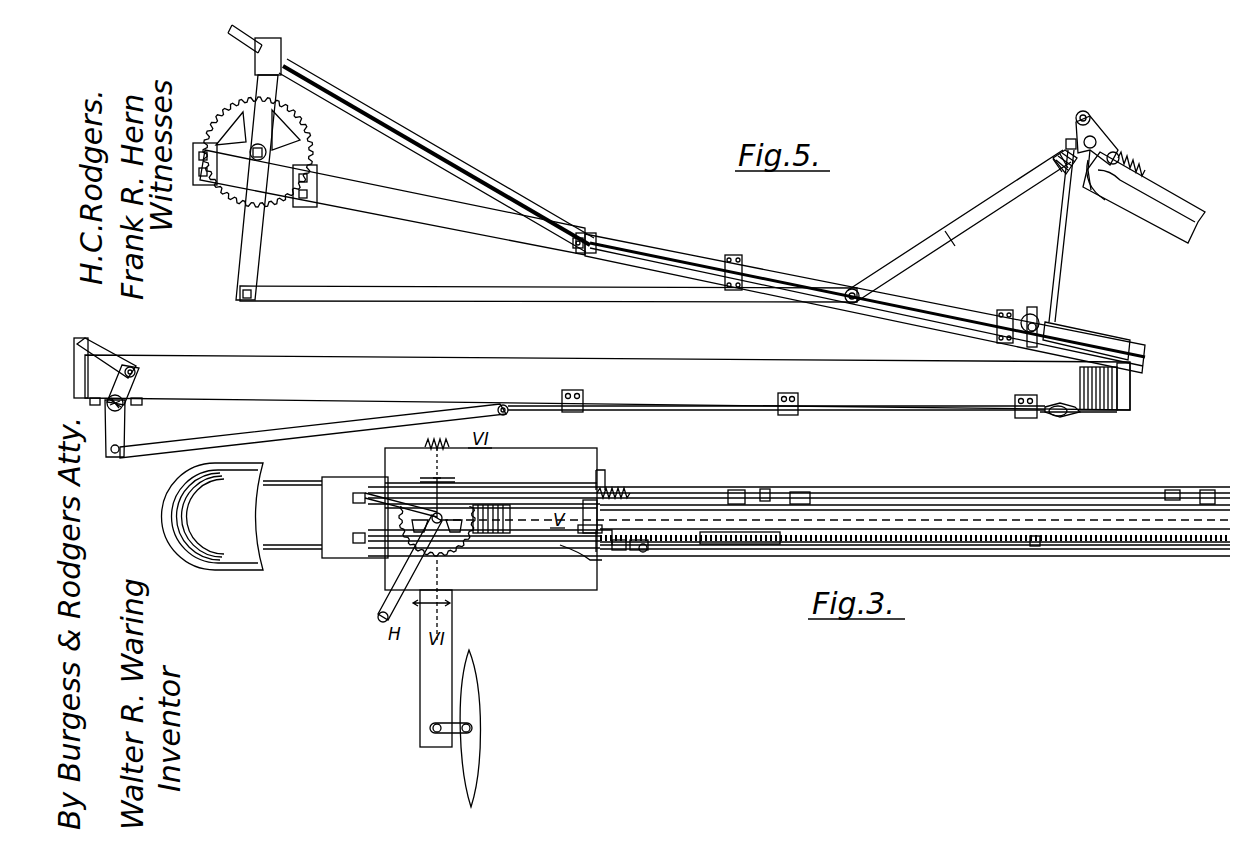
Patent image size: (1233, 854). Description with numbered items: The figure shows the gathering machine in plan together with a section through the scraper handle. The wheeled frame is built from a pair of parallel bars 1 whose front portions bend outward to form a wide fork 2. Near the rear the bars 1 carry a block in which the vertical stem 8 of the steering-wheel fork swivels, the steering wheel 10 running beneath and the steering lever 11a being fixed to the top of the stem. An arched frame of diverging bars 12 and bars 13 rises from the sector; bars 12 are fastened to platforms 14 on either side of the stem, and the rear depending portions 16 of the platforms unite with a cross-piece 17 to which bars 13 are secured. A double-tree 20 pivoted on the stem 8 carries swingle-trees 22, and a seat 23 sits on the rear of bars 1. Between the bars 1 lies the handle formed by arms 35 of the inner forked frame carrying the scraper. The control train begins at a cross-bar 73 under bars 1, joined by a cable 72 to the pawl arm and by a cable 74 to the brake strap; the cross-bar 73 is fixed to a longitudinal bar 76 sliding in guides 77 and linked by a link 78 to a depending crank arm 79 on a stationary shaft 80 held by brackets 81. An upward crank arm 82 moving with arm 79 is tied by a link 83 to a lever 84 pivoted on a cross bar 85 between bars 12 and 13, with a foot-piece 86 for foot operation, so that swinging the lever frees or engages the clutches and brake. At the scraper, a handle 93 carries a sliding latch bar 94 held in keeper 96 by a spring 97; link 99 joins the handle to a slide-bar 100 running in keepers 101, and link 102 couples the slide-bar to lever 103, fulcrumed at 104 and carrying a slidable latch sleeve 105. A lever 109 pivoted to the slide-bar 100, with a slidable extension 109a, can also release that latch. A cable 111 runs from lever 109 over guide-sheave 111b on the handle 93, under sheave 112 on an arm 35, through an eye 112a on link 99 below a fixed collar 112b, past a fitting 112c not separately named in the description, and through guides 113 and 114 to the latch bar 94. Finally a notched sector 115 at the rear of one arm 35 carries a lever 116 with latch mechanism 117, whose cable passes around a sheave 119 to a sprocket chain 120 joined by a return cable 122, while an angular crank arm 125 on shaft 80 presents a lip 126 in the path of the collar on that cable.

In FIG. 5, the parallel bars 1 is at (712, 340).
In FIG. 3, the parallel bars 1 is at (985, 492).
In FIG. 5, the fork 2 is at (1130, 376).
In FIG. 3, the vertical stem 8 is at (470, 472).
In FIG. 3, the steering wheel 10 is at (510, 518).
In FIG. 3, the steering lever 11a is at (380, 618).
In FIG. 3, the bars 12 is at (590, 500).
In FIG. 3, the bars 13 is at (355, 492).
In FIG. 3, the platforms 14 is at (520, 458).
In FIG. 3, the depending portions 16 is at (370, 490).
In FIG. 3, the cross-piece 17 is at (330, 516).
In FIG. 3, the double-tree 20 is at (430, 689).
In FIG. 3, the swingle-trees 22 is at (472, 705).
In FIG. 3, the seat 23 is at (213, 516).
In FIG. 5, the arms 35 is at (675, 245).
In FIG. 3, the arms 35 is at (1110, 500).
In FIG. 5, the cable 72 is at (1117, 397).
In FIG. 5, the cross-bar 73 is at (1058, 418).
In FIG. 5, the cable 74 is at (1100, 413).
In FIG. 5, the longitudinal bar 76 is at (750, 413).
In FIG. 5, the guides 77 is at (800, 414).
In FIG. 5, the link 78 is at (260, 433).
In FIG. 3, the link 78 is at (628, 497).
In FIG. 5, the crank arm 79 is at (108, 436).
In FIG. 5, the stationary shaft 80 is at (108, 406).
In FIG. 5, the brackets 81 is at (142, 402).
In FIG. 5, the crank arm 82 is at (138, 385).
In FIG. 3, the crank arm 82 is at (600, 520).
In FIG. 5, the link 83 is at (100, 358).
In FIG. 3, the link 83 is at (600, 478).
In FIG. 3, the lever 84 is at (430, 480).
In FIG. 3, the cross bar 85 is at (390, 495).
In FIG. 3, the foot-piece 86 is at (435, 468).
In FIG. 5, the handle 93 is at (1168, 215).
In FIG. 5, the latch bar 94 is at (1168, 188).
In FIG. 5, the keeper 96 is at (1145, 172).
In FIG. 5, the spring 97 is at (1122, 158).
In FIG. 5, the link 99 is at (978, 207).
In FIG. 5, the slide-bar 100 is at (810, 283).
In FIG. 3, the slide-bar 100 is at (1170, 490).
In FIG. 5, the keepers 101 is at (735, 258).
In FIG. 3, the keepers 101 is at (1208, 490).
In FIG. 5, the link 102 is at (445, 292).
In FIG. 3, the link 102 is at (1148, 542).
In FIG. 5, the lever 103 is at (245, 266).
In FIG. 3, the lever 103 is at (805, 492).
In FIG. 5, the fulcrum 104 is at (255, 158).
In FIG. 5, the slidable sleeve 105 is at (283, 52).
In FIG. 3, the slidable sleeve 105 is at (768, 490).
In FIG. 5, the lever 109 is at (425, 140).
In FIG. 3, the lever 109 is at (660, 512).
In FIG. 3, the slidable extension 109a is at (600, 470).
In FIG. 5, the cable 111 is at (485, 178).
In FIG. 5, the guide-sheave 111b is at (1078, 113).
In FIG. 5, the guide sheave 112 is at (1045, 320).
In FIG. 5, the eye 112a is at (1089, 175).
In FIG. 5, the fixed collar 112b is at (1065, 143).
In FIG. 5, the joint 112c is at (1058, 157).
In FIG. 5, the guide 113 is at (600, 248).
In FIG. 5, the guide 114 is at (556, 222).
In FIG. 5, the notched sector 115 is at (315, 158).
In FIG. 3, the notched sector 115 is at (745, 548).
In FIG. 3, the lever 116 is at (622, 550).
In FIG. 3, the latch mechanism 117 is at (650, 550).
In FIG. 3, the sheave 119 is at (608, 540).
In FIG. 3, the sprocket chain 120 is at (1035, 548).
In FIG. 3, the cable 122 is at (738, 490).
In FIG. 3, the angular crank arm 125 is at (598, 548).
In FIG. 3, the lip 126 is at (585, 556).